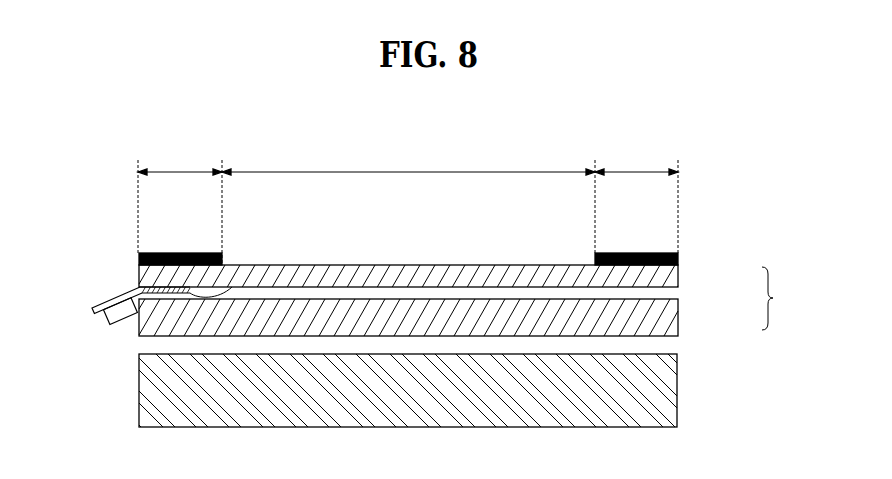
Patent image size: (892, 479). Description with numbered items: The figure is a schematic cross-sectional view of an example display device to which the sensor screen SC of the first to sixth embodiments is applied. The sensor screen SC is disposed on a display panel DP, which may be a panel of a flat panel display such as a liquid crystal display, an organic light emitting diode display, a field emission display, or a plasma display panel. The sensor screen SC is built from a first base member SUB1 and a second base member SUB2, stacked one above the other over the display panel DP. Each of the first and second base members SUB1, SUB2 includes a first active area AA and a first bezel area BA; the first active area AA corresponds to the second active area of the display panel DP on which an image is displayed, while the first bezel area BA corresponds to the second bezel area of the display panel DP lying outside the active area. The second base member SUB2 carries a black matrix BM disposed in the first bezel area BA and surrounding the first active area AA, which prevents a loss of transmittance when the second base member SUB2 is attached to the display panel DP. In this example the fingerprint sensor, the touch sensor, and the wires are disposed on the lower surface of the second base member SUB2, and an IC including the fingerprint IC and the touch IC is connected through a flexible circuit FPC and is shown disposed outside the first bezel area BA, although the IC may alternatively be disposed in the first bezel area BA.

The bezel area BA is at (408, 207).
The active area AA is at (408, 162).
The black matrix BM is at (636, 252).
The second base member SUB2 is at (680, 273).
The first base member SUB1 is at (680, 314).
The sensor screen SC is at (780, 298).
The flexible printed circuit FPC is at (105, 298).
The element IC is at (104, 318).
The display panel DP is at (678, 388).